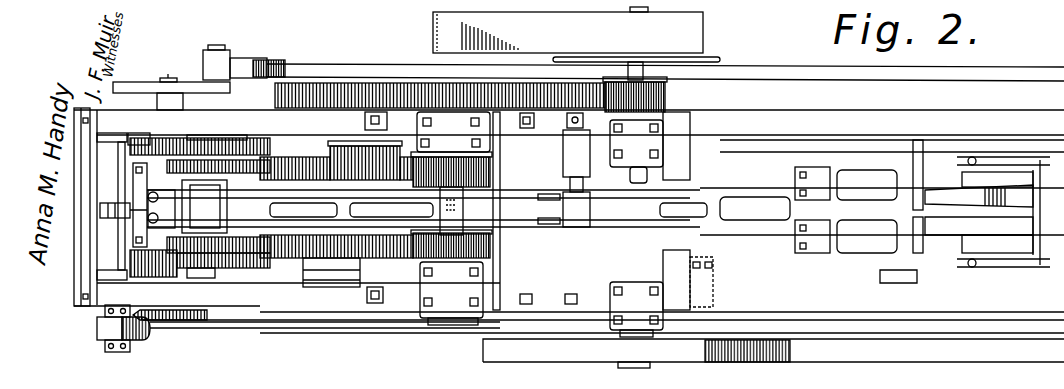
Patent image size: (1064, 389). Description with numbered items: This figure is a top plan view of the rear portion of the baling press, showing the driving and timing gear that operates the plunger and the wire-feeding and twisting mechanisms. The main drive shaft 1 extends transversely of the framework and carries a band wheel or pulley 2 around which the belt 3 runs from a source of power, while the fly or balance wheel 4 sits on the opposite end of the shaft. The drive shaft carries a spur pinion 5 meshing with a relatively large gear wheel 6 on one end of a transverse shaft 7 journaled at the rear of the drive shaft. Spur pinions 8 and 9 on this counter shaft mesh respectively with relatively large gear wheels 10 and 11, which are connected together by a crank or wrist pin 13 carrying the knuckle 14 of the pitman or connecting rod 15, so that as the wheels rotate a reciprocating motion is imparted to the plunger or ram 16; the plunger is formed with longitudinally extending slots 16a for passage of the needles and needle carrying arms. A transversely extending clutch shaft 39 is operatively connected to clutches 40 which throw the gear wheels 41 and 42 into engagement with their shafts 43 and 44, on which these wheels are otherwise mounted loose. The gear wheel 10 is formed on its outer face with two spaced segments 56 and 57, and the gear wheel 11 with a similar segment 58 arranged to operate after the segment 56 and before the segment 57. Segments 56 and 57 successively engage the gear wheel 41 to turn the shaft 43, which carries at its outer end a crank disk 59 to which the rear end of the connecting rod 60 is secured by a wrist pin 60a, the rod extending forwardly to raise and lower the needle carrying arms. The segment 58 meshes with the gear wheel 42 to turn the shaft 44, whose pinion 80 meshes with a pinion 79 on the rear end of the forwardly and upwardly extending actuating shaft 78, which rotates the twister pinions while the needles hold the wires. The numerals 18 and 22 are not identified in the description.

The main drive shaft 1 is at (643, 70).
The band wheel or pulley 2 is at (683, 13).
The band or belt 3 is at (432, 30).
The fly or balance wheel 4 is at (727, 345).
The spur pinion 5 is at (667, 97).
The gear wheel 6 is at (335, 92).
The transverse shaft 7 is at (452, 318).
The spur pinion 8 is at (433, 168).
The spur pinion 9 is at (425, 262).
The gear wheel 10 is at (263, 130).
The gear wheel 11 is at (360, 257).
The crank or wrist pin 13 is at (207, 278).
The knuckle 14 is at (220, 257).
The pitman or connecting rod 15 is at (295, 200).
The plunger or ram 16 is at (867, 255).
The longitudinally extending slots 16a is at (865, 160).
The clamp 18 is at (950, 257).
The cross-head 22 is at (557, 227).
The clutch shaft 39 is at (117, 253).
The clutches 40 is at (137, 165).
The gear wheel 41 is at (140, 140).
The gear wheel 42 is at (163, 333).
The shaft 43 is at (172, 72).
The shaft 44 is at (163, 327).
The segment 56 is at (240, 140).
The segment 57 is at (340, 145).
The segment 58 is at (302, 268).
The crank disk 59 is at (127, 82).
The connecting rod 60 is at (308, 72).
The wrist pin 60a is at (244, 48).
The actuating shaft 78 is at (368, 330).
The pinion 79 is at (137, 343).
The pinion 80 is at (148, 312).